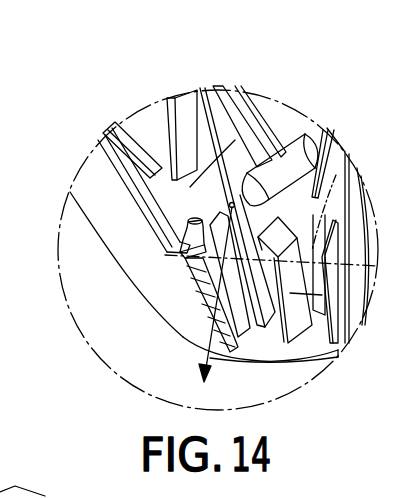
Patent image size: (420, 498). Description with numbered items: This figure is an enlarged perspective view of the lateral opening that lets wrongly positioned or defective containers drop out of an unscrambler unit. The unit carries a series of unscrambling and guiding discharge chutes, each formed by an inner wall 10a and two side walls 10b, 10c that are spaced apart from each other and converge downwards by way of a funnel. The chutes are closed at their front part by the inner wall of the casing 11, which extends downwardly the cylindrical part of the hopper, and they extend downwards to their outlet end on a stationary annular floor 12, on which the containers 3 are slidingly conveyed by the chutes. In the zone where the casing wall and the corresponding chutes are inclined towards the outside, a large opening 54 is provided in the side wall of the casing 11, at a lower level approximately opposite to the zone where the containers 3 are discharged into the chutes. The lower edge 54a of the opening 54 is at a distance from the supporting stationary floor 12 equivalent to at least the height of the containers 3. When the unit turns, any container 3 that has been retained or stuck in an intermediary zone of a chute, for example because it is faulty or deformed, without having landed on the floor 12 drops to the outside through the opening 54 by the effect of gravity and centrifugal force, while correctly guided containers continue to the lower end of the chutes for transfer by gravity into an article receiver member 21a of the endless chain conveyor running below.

The container 3 is at (303, 138).
The inner wall 10a is at (211, 165).
The side wall 10b is at (133, 137).
The side wall 10c is at (183, 123).
The casing 11 is at (128, 245).
The stationary annular floor 12 is at (275, 342).
The opening 54 is at (150, 193).
The lower edge 54a is at (336, 175).
The article receiver member 21a is at (22, 463).